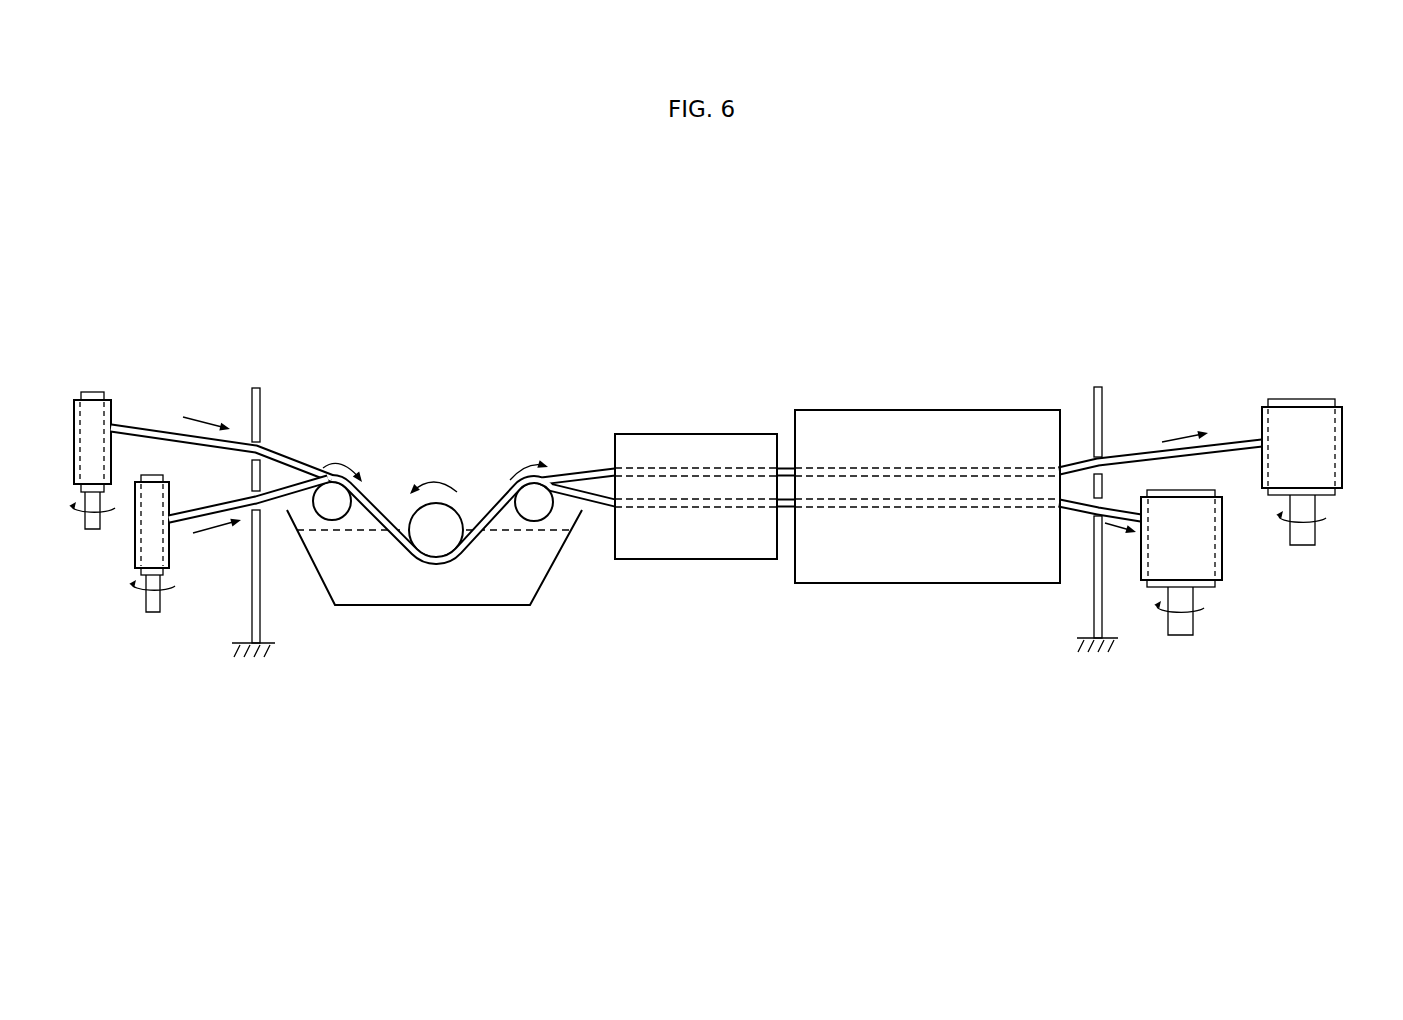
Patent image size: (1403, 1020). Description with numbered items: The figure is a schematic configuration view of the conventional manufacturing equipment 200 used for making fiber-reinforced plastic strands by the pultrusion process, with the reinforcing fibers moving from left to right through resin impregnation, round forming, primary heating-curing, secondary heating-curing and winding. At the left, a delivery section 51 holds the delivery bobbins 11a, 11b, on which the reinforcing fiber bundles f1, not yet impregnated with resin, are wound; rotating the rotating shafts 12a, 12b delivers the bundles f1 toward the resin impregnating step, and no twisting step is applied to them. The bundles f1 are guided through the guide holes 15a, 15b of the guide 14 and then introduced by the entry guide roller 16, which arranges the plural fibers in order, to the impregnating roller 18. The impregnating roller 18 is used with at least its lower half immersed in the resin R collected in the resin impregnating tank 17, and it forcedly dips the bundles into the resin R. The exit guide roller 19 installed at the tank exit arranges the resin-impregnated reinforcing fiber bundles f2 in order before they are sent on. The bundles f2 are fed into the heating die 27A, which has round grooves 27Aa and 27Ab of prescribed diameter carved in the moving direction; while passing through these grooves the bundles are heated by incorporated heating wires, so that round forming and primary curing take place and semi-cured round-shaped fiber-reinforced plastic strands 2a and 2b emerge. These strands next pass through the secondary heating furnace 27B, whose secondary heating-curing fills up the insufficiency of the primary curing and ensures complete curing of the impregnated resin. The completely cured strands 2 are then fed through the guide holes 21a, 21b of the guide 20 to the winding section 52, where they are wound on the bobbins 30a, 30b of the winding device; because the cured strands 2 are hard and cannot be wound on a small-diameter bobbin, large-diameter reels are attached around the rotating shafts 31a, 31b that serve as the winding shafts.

The manufacturing equipment 200 is at (742, 275).
The fiber supply unit 51 is at (120, 342).
The take-up unit 52 is at (1239, 337).
The delivery bobbin 11a is at (75, 420).
The delivery bobbin 11b is at (137, 545).
The rotating shaft 12a is at (90, 522).
The rotating shaft 12b is at (158, 606).
The guide 14 is at (257, 390).
The guide hole 15a is at (262, 449).
The guide hole 15b is at (268, 505).
The entry guide roller 16 is at (338, 500).
The resin impregnating tank 17 is at (451, 608).
The resin R is at (398, 586).
The impregnating roller 18 is at (447, 518).
The exit guide roller 19 is at (537, 508).
The reinforcing fiber bundle f1 is at (196, 512).
The resin-impregnated reinforcing fiber bundle f2 is at (593, 547).
The heating die 27A is at (652, 431).
The round groove 27Aa is at (693, 476).
The round groove 27Ab is at (717, 504).
The semi-cured round-shaped fiber-reinforced plastic strand 2a is at (790, 476).
The semi-cured round-shaped fiber-reinforced plastic strand 2b is at (787, 508).
The secondary heating furnace 27B is at (933, 400).
The guide hole 21a is at (1092, 462).
The guide hole 21b is at (1092, 514).
The guide 20 is at (1101, 390).
The fiber-reinforced plastic strand 2 is at (1127, 462).
The winding bobbin 30a is at (1338, 437).
The winding bobbin 30b is at (1218, 548).
The rotating shaft 31a is at (1312, 537).
The rotating shaft 31b is at (1190, 623).